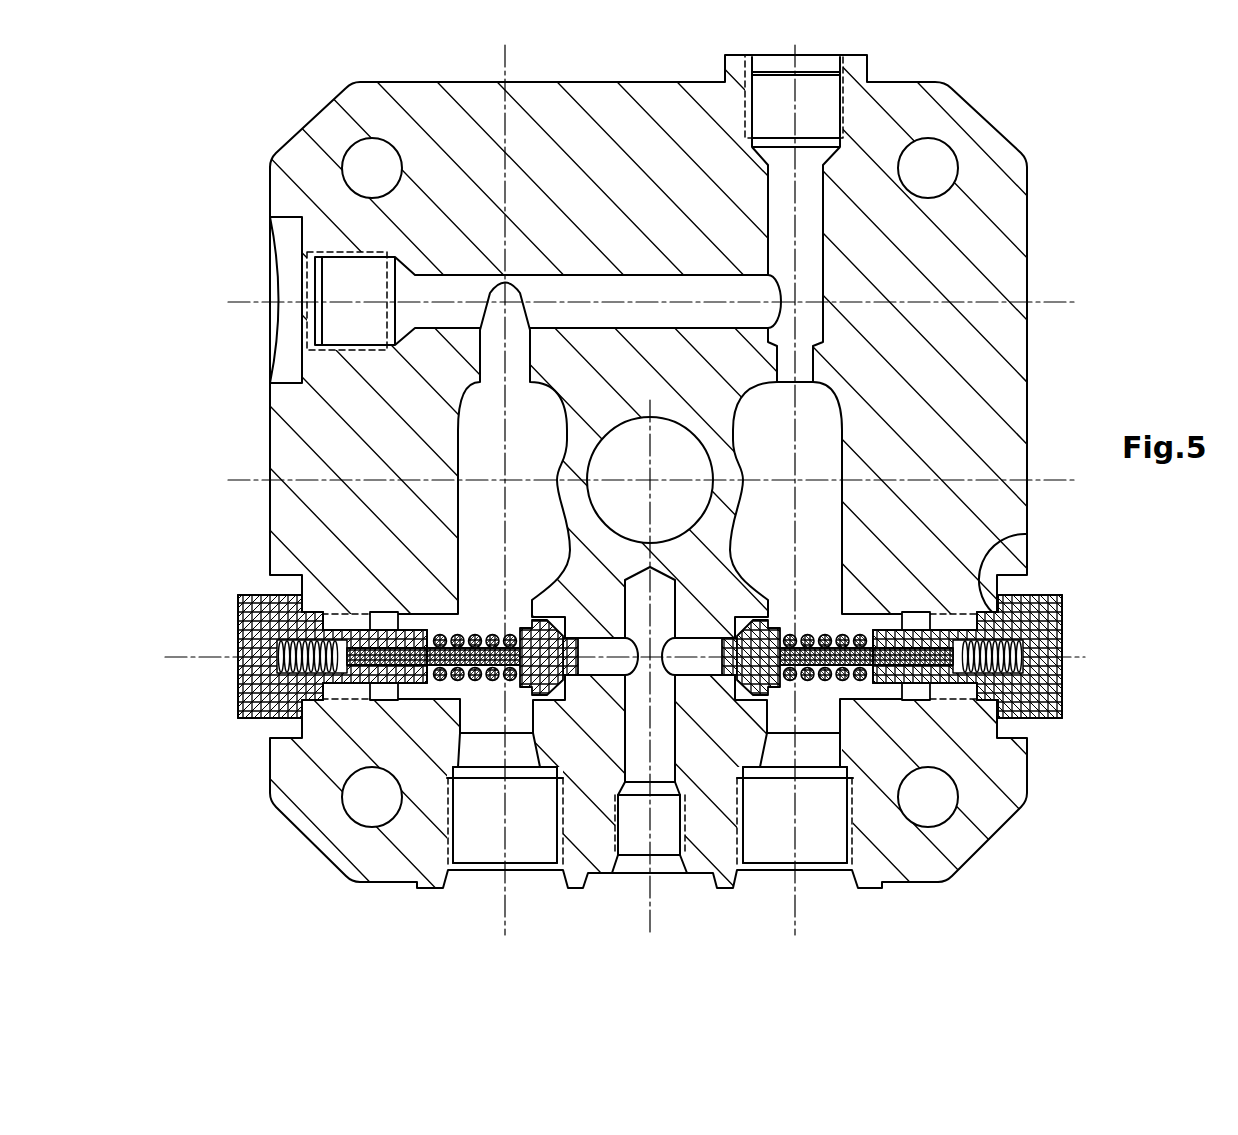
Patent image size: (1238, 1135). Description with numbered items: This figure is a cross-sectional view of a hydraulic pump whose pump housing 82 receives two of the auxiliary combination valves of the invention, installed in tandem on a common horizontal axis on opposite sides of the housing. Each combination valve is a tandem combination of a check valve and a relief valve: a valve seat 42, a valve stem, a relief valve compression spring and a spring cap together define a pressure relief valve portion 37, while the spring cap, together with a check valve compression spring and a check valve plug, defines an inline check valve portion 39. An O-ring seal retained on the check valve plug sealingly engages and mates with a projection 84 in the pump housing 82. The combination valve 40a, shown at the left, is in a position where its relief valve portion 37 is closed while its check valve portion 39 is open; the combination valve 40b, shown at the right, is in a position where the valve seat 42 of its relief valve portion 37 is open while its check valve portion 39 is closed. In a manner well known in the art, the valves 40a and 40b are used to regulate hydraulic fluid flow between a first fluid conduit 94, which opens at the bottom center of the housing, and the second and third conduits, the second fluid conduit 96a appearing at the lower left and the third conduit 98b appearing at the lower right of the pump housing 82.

The pump housing 82 is at (1040, 393).
The projection 84 is at (1028, 531).
The combination valve 40a is at (232, 597).
The combination valve 40b is at (1074, 586).
The check valve portion 39 is at (250, 727).
The valve seat 42 is at (773, 626).
The pressure relief valve portion 37 is at (472, 630).
The first fluid conduit 94 is at (668, 869).
The second fluid conduit 96a is at (527, 873).
The second port 98b is at (822, 881).